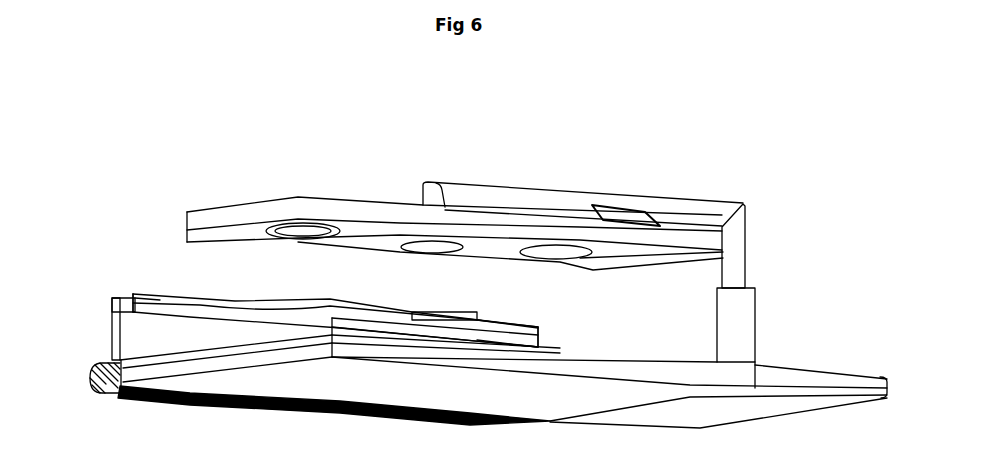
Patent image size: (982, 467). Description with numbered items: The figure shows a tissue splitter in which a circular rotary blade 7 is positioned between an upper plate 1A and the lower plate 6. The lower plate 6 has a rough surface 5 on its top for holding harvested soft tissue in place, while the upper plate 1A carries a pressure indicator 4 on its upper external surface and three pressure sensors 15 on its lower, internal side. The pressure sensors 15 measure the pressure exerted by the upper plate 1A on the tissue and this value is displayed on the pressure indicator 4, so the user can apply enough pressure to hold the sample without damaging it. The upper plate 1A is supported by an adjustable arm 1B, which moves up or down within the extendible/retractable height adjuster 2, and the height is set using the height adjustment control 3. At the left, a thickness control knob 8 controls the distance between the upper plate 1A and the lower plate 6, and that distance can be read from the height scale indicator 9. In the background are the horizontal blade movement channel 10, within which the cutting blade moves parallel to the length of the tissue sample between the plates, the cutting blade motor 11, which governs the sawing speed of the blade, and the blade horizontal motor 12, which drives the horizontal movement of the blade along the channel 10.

The upper plate 1A is at (313, 198).
The adjustable arm 1B is at (745, 232).
The height adjuster 2 is at (745, 297).
The height adjustment control 3 is at (755, 365).
The pressure indicator 4 is at (637, 212).
The rough surface 5 is at (615, 357).
The lower plate 6 is at (638, 370).
The circular rotary blade 7 is at (320, 305).
The thickness control knob 8 is at (100, 377).
The height scale indicator 9 is at (110, 332).
The horizontal blade movement channel 10 is at (513, 333).
The cutting blade motor 11 is at (163, 295).
The blade horizontal motor 12 is at (438, 312).
The pressure sensor 15 is at (296, 240).